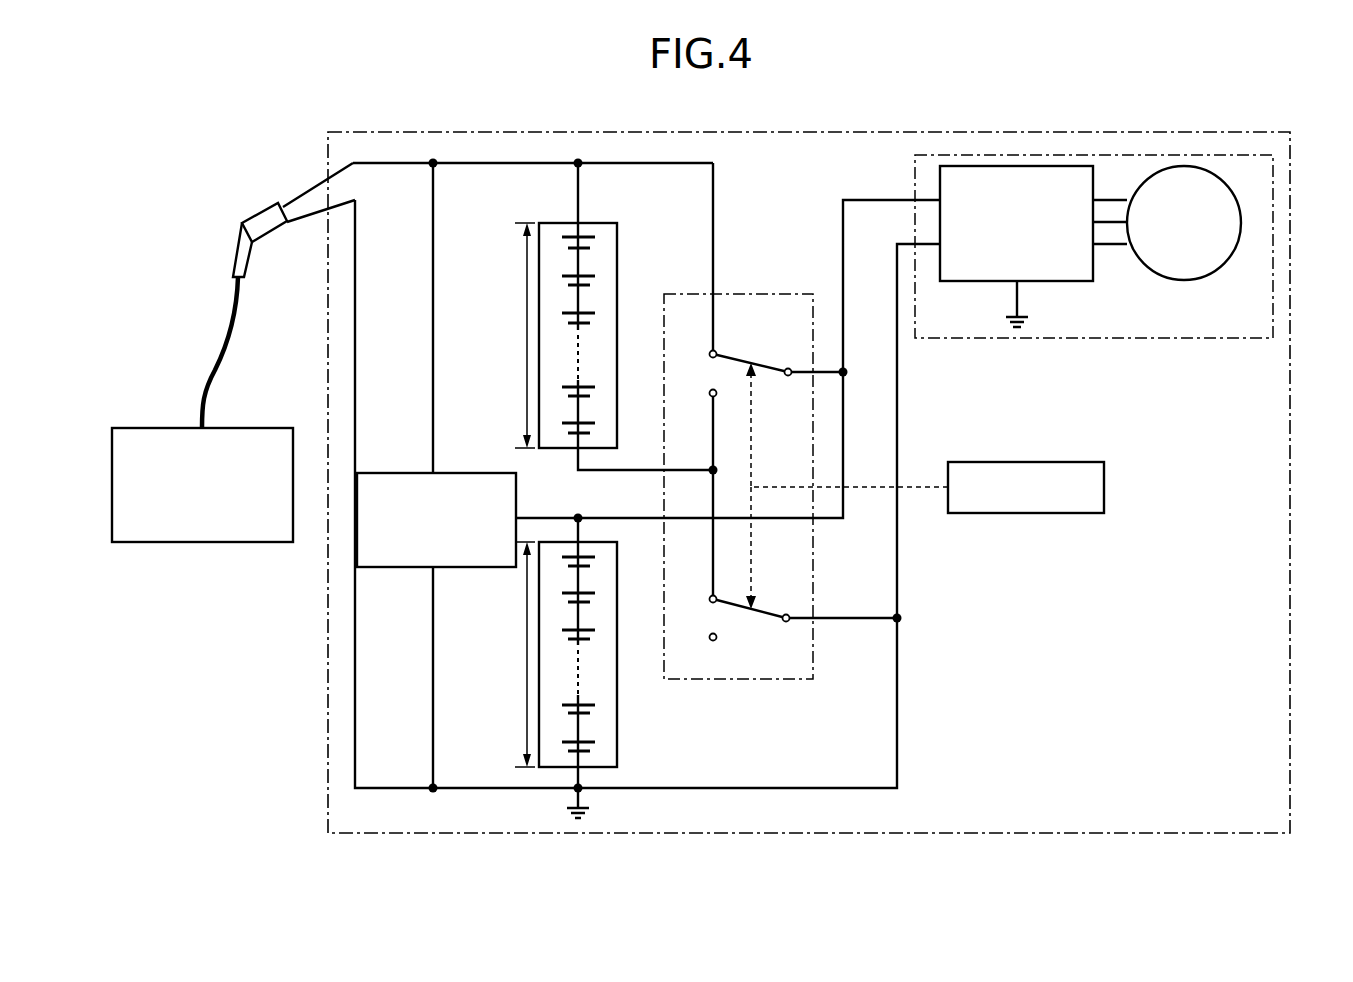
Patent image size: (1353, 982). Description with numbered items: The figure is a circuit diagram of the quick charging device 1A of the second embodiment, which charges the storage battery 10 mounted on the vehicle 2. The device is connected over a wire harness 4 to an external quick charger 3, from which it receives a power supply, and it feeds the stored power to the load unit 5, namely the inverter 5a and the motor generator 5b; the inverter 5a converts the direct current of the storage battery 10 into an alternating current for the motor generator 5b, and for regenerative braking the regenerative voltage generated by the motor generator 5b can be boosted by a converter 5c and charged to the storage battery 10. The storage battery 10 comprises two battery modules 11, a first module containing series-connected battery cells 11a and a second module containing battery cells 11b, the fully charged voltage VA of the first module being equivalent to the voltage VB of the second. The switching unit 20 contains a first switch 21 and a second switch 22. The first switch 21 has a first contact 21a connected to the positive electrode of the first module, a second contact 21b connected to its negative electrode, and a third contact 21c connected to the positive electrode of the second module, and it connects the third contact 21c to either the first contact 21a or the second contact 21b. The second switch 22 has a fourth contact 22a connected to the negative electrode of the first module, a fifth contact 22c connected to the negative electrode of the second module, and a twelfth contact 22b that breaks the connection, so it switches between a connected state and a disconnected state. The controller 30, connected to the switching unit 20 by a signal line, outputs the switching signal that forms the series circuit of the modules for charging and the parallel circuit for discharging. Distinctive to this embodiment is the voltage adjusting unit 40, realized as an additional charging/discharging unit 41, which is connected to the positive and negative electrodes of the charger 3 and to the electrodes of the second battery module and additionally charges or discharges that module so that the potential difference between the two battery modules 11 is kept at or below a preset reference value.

The vehicle 2 is at (850, 133).
The quick charging device 1A is at (755, 190).
The external charger (quick charger) 3 is at (245, 428).
The wire harness 4 is at (527, 163).
The storage battery 10 is at (652, 218).
The battery module 11 is at (607, 495).
The battery cell 11a is at (593, 237).
The battery cell 11b is at (592, 557).
The switching unit 20 is at (767, 292).
The first switch 21 is at (737, 365).
The first contact 21a is at (715, 351).
The second contact 21b is at (712, 390).
The third contact 21c is at (788, 378).
The second switch 22 is at (739, 636).
The fourth contact 22a is at (709, 601).
The twelfth contact 22b is at (713, 643).
The fifth contact 22c is at (786, 624).
The controller 30 is at (1081, 462).
The voltage adjusting unit 40 is at (436, 482).
The additional charging/discharging unit 41 is at (383, 471).
The load unit 5 is at (1094, 272).
The inverter 5a is at (1053, 283).
The motor generator (MG) 5b is at (1178, 283).
The converter 5c is at (1110, 222).